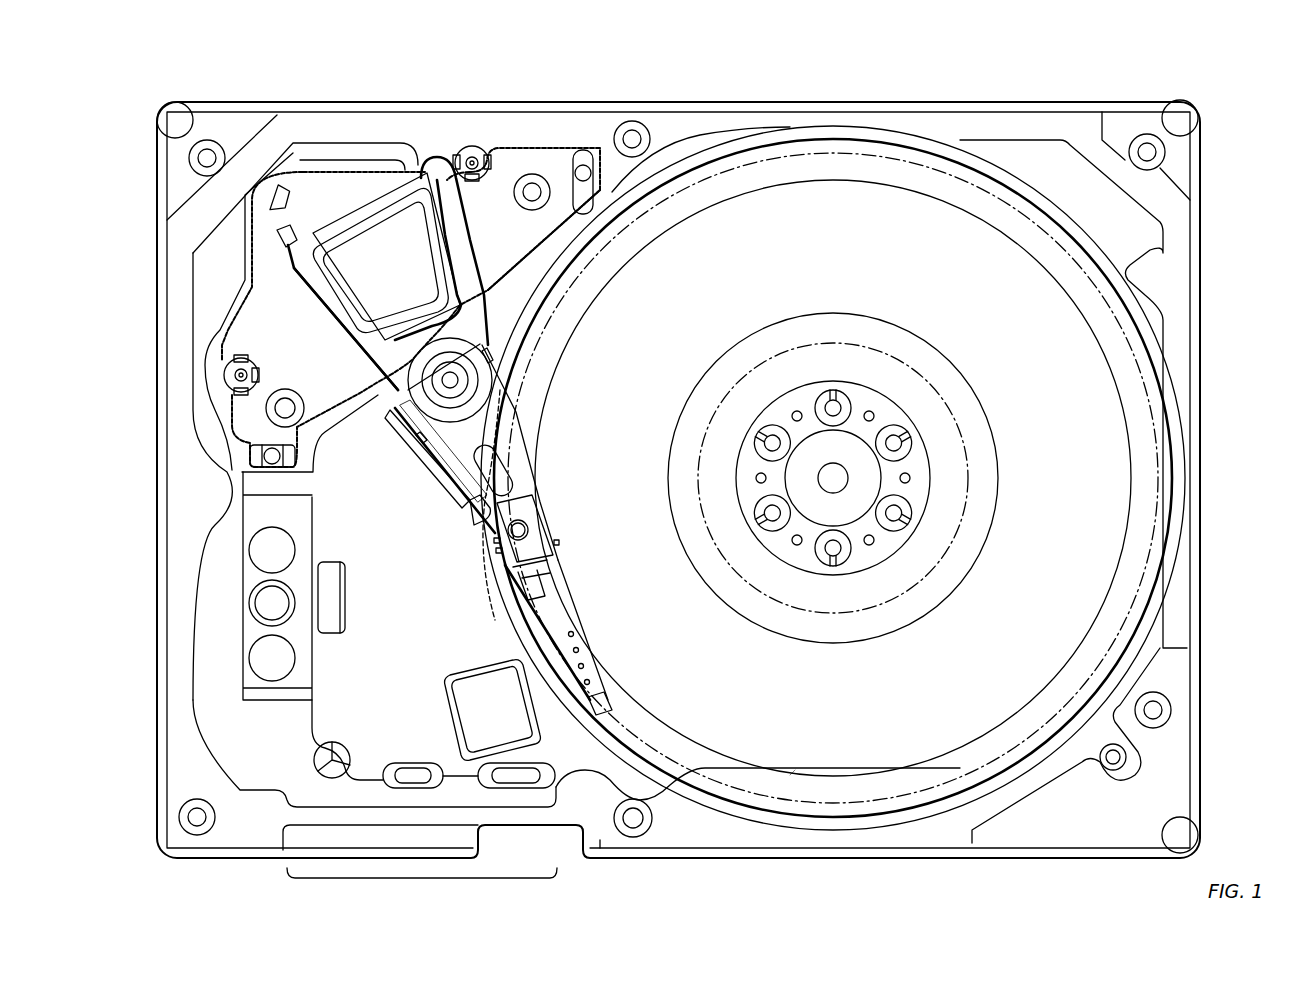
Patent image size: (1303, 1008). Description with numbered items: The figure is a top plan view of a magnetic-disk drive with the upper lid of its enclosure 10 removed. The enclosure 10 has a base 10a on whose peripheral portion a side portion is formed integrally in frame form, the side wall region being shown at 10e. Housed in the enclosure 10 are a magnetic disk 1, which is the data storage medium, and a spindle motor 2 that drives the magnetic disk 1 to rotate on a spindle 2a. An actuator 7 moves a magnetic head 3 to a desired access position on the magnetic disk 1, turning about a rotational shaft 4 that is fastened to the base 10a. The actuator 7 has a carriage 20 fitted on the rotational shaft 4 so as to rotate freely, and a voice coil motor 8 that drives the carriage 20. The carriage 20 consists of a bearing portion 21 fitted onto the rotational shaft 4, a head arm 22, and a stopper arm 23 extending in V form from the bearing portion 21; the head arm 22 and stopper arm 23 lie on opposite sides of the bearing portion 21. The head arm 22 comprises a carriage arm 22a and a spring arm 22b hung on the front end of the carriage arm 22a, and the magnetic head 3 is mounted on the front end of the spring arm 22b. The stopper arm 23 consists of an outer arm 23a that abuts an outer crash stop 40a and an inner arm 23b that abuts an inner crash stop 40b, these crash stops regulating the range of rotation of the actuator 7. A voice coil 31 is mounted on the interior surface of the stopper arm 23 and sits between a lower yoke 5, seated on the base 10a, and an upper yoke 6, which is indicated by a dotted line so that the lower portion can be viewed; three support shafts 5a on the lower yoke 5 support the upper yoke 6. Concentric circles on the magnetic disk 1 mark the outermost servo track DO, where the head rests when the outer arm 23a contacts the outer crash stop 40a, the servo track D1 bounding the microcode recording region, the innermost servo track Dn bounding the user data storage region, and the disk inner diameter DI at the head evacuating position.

The magnetic disk 1 is at (1138, 456).
The spindle motor 2 is at (866, 450).
The spindle 2a is at (830, 478).
The magnetic head 3 is at (592, 706).
The rotational shaft 4 is at (463, 362).
The lower yoke 5 is at (524, 258).
The support shafts 5a is at (585, 150).
The upper yoke 6 is at (585, 255).
The actuator 7 is at (391, 540).
The voice coil motor (VCM) 8 is at (340, 148).
The enclosure 10 is at (388, 873).
The base 10a is at (400, 729).
The base side wall 10e is at (600, 835).
The carriage 20 is at (479, 525).
The bearing portion 21 is at (490, 392).
The head arm 22 is at (495, 540).
The carriage arm 22a is at (480, 505).
The spring arm 22b is at (530, 592).
The stopper arm 23 is at (320, 297).
The outer arm 23a is at (478, 226).
The inner arm 23b is at (337, 323).
The voice coil 31 is at (342, 283).
The outer crash stop 40a is at (472, 146).
The inner crash stop 40b is at (224, 375).
The servo track D1 is at (790, 775).
The outermost servo track D0 DO is at (860, 800).
The disk ID DI is at (960, 540).
The innermost servo track Dn is at (955, 592).